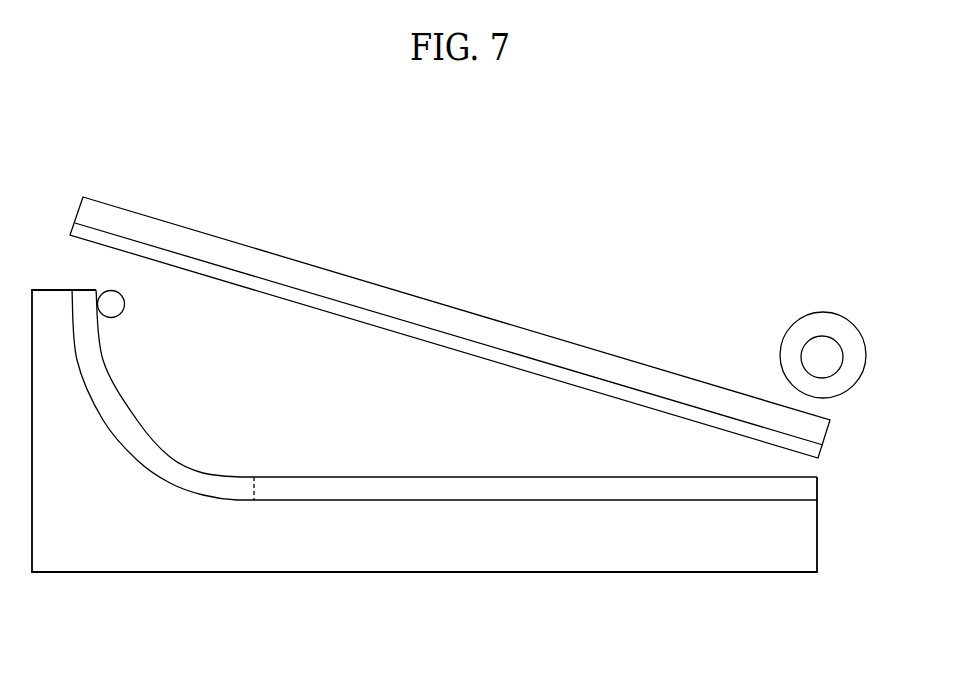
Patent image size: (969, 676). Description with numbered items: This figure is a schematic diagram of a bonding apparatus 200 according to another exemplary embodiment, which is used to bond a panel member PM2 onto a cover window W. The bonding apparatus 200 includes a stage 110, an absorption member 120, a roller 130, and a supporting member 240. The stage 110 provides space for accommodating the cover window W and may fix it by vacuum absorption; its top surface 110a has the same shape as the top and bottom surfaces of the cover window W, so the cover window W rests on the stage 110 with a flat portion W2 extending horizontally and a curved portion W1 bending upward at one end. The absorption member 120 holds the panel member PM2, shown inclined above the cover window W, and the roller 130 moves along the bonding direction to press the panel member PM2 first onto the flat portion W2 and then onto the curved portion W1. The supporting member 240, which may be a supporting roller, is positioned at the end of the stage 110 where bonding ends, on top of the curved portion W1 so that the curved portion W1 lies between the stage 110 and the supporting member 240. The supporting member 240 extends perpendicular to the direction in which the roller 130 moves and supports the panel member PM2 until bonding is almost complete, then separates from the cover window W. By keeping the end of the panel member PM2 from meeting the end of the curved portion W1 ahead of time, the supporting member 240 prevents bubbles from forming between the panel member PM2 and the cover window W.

The stage 110 is at (550, 542).
The top surface of the stage 110a is at (790, 500).
The absorption member 120 is at (520, 340).
The roller 130 is at (818, 325).
The bonding apparatus 200 is at (468, 297).
The supporting member 240 is at (116, 306).
The panel member PM2 is at (370, 320).
The cover window W is at (485, 456).
The curved portion of the cover window W1 is at (167, 465).
The flat portion of the cover window W2 is at (438, 485).